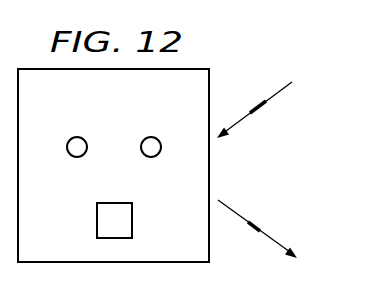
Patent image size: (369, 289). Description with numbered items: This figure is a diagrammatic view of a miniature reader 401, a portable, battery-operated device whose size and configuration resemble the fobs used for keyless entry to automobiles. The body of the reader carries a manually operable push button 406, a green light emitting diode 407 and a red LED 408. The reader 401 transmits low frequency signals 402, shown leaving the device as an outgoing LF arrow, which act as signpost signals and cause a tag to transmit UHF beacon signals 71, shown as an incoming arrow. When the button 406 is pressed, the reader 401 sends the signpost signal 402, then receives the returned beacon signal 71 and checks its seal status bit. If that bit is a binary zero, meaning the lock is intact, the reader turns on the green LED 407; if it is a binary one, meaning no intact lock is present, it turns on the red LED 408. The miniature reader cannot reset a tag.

The miniature reader 401 is at (216, 50).
The push button 406 is at (96, 226).
The green light emitting diode 407 is at (73, 137).
The red LED 408 is at (153, 137).
The UHF beacon signals 71 is at (267, 101).
The low frequency signals 402 is at (275, 243).